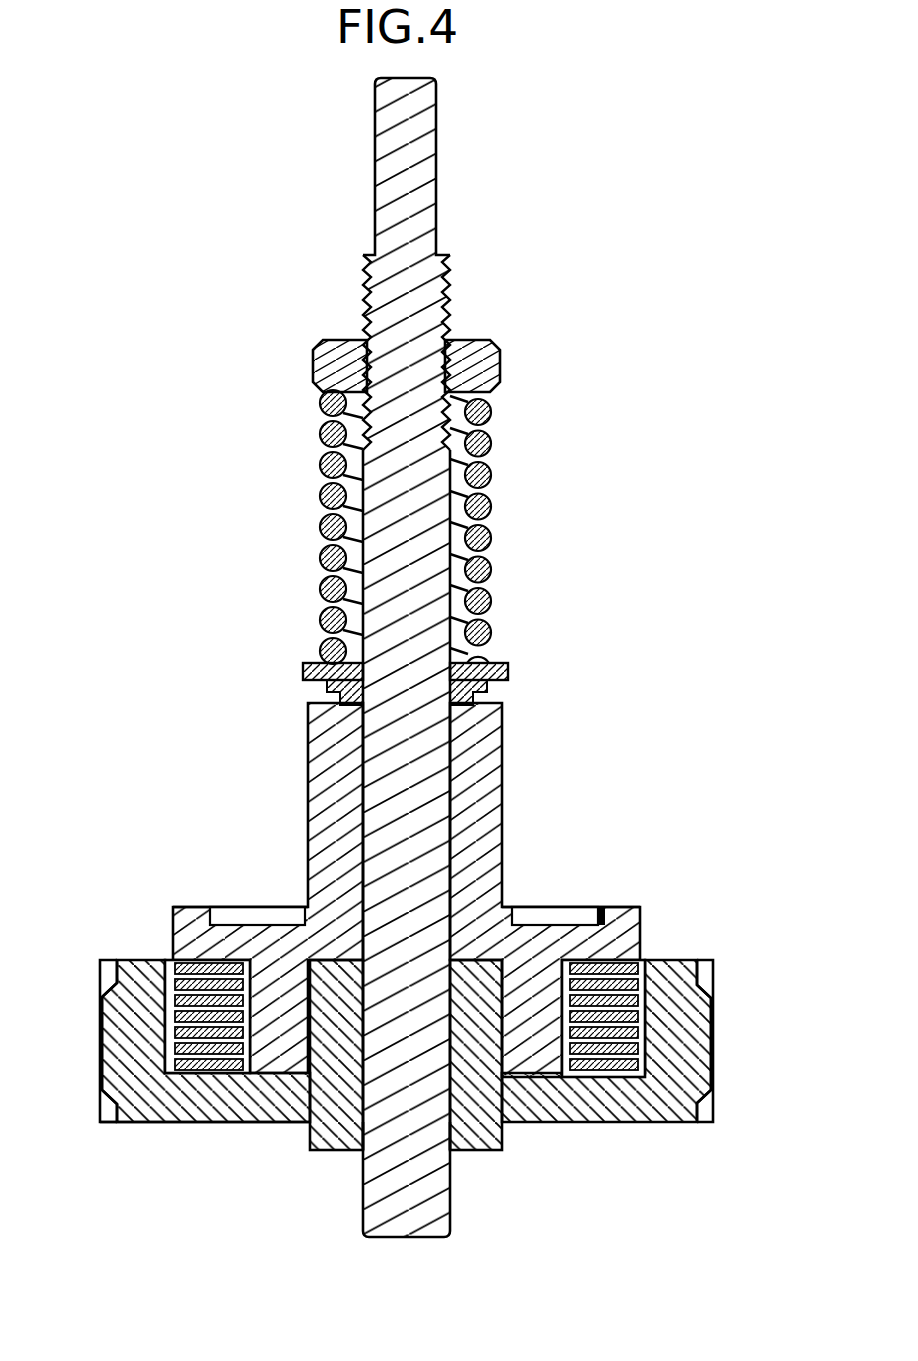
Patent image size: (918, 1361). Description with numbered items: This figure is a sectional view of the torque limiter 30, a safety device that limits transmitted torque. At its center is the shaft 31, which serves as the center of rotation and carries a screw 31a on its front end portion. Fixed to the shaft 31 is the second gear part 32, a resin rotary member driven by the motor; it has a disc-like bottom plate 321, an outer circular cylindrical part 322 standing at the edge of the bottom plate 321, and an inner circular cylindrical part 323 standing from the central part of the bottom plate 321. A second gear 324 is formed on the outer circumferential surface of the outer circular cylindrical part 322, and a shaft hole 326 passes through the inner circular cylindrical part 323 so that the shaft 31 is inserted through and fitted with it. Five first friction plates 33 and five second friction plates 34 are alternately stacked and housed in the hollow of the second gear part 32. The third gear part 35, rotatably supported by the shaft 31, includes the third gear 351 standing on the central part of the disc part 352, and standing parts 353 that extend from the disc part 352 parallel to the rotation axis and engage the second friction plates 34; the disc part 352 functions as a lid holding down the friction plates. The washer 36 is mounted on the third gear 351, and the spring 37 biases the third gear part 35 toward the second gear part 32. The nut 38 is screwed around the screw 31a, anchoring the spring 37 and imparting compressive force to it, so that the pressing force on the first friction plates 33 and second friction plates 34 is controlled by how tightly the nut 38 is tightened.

The torque limiter 30 is at (657, 646).
The shaft 31 is at (418, 186).
The screw 31a is at (452, 298).
The second gear part 32 is at (389, 1069).
The first friction plates 33 is at (168, 1060).
The second friction plates 34 is at (640, 1062).
The third gear part 35 is at (393, 890).
The washer 36 is at (303, 673).
The spring 37 is at (498, 508).
The nut 38 is at (485, 354).
The bottom plate 321 is at (217, 1113).
The outer circular cylindrical part 322 is at (113, 1073).
The inner circular cylindrical part 323 is at (333, 1053).
The second gear 324 is at (700, 958).
The shaft hole 326 is at (380, 1142).
The third gear 351 is at (506, 790).
The disc part 352 is at (190, 912).
The standing parts 353 is at (575, 898).